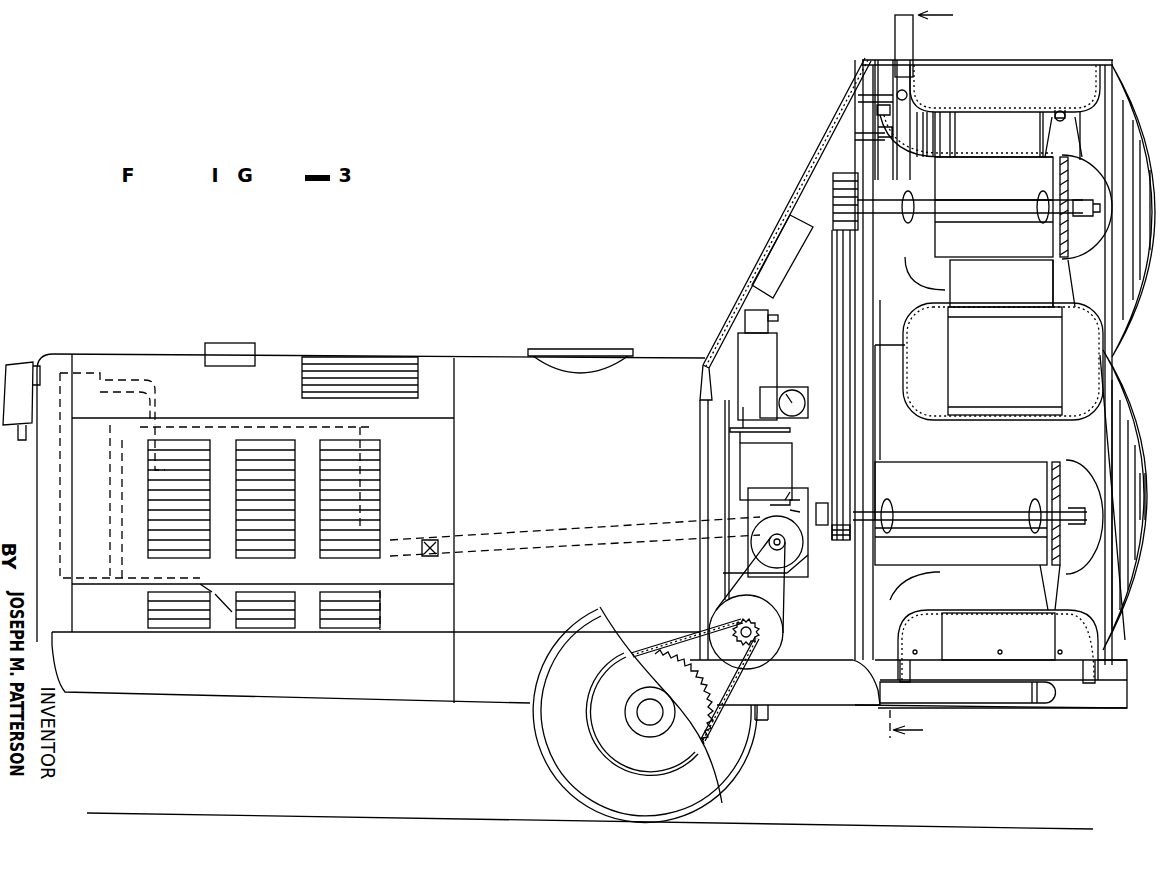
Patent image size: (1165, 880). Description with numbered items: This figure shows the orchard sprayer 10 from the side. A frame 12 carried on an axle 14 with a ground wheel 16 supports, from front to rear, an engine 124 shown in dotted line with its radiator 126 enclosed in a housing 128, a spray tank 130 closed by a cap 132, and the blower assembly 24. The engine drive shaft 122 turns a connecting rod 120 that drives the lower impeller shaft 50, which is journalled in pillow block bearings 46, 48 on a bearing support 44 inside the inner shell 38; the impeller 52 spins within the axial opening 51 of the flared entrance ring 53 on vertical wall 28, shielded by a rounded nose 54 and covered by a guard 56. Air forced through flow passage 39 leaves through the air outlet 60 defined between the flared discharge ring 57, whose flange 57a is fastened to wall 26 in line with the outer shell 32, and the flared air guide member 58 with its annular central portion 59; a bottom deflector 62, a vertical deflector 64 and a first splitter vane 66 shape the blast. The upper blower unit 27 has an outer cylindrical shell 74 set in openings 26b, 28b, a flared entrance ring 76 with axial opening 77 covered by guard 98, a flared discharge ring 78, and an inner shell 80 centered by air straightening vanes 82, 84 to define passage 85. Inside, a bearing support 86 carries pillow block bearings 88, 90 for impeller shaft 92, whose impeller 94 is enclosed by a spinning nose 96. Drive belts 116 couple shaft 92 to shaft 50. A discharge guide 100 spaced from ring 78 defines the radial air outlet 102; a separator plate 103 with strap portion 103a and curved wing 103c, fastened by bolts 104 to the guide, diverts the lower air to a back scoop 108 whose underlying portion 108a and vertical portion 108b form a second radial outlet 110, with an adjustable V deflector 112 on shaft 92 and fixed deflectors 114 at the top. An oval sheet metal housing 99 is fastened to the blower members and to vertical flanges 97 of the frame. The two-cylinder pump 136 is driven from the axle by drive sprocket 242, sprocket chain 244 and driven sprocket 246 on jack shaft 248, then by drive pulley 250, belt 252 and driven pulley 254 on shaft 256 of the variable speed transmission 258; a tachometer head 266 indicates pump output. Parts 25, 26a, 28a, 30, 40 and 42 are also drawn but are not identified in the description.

The sprayer 10 is at (452, 256).
The frame 12 is at (488, 694).
The axle 14 is at (643, 717).
The ground wheel 16 is at (725, 805).
The blower assembly 24 is at (1107, 57).
The platform 25 is at (870, 670).
The wall 26 is at (948, 345).
The tank wall 26a is at (940, 610).
The opening 26b is at (955, 125).
The upper blower unit 27 is at (941, 76).
The vertical wall 28 is at (1095, 363).
The roller 28a is at (1055, 605).
The opening 28b is at (1060, 112).
The plate 30 is at (1030, 310).
The outer shell 32 is at (980, 470).
The inner shell 38 is at (910, 468).
The flow passage 39 is at (922, 540).
The tank bottom 40 is at (985, 610).
The housing top 42 is at (1010, 465).
The bearing support 44 is at (1000, 530).
The pillow block bearing 46 is at (888, 528).
The pillow block bearing 48 is at (1030, 528).
The impeller shaft 50 is at (1000, 512).
The axial opening 51 is at (1098, 403).
The impeller 52 is at (1055, 580).
The flared entrance ring 53 is at (1090, 630).
The rounded nose 54 is at (1077, 509).
The guard 56 is at (1102, 387).
The flared discharge ring 57 is at (910, 395).
The flange 57a is at (940, 420).
The flared air guide member 58 is at (880, 592).
The annular central portion 59 is at (948, 465).
The air outlet 60 is at (905, 378).
The bottom deflector 62 is at (869, 639).
The vertical deflector 64 is at (925, 475).
The first splitter vane 66 is at (905, 338).
The outer cylindrical shell 74 is at (1032, 115).
The flared entrance ring 76 is at (1102, 105).
The axial opening 77 is at (1105, 345).
The flared discharge ring 78 is at (925, 92).
The inner shell 80 is at (1040, 160).
The air straightening vane 82 is at (997, 310).
The air straightening vane 84 is at (1000, 157).
The cylindrical air flow passage 85 is at (955, 142).
The bearing support 86 is at (1005, 222).
The pillow block bearing 88 is at (910, 222).
The pillow block bearing 90 is at (1035, 222).
The impeller shaft 92 is at (970, 222).
The impeller 94 is at (1055, 265).
The spinning nose 96 is at (1083, 197).
The rigid vertical flanges 97 is at (1020, 665).
The guard 98 is at (1125, 310).
The sheet metal housing 99 is at (1020, 63).
The discharge guide 100 is at (893, 172).
The radial opening air outlet 102 is at (895, 127).
The separator plate 103 is at (870, 268).
The central cylindrical strap portion 103a is at (945, 265).
The curved wing 103c is at (940, 280).
The bolts 104 is at (885, 282).
The back scoop 108 is at (851, 164).
The underlying portion 108a is at (880, 298).
The vertical portion 108b is at (880, 150).
The second radial outlet 110 is at (893, 192).
The adjustable V deflector 112 is at (900, 140).
The fixed deflectors 114 is at (895, 22).
The drive belts 116 is at (840, 323).
The connecting rod 120 is at (555, 528).
The drive shaft 122 is at (405, 545).
The engine 124 is at (273, 526).
The radiator 126 is at (86, 372).
The housing 128 is at (182, 367).
The spray tank 130 is at (481, 372).
The cap 132 is at (595, 350).
The two cylinder pump 136 is at (745, 345).
The drive sprocket 242 is at (705, 693).
The sprocket chain 244 is at (665, 648).
The driven sprocket 246 is at (760, 645).
The jack shaft 248 is at (783, 630).
The drive pulley 250 is at (725, 608).
The belt 252 is at (727, 555).
The driven pulley 254 is at (785, 545).
The shaft 256 is at (745, 535).
The variable speed transmission 258 is at (763, 492).
The tachometer head 266 is at (795, 418).